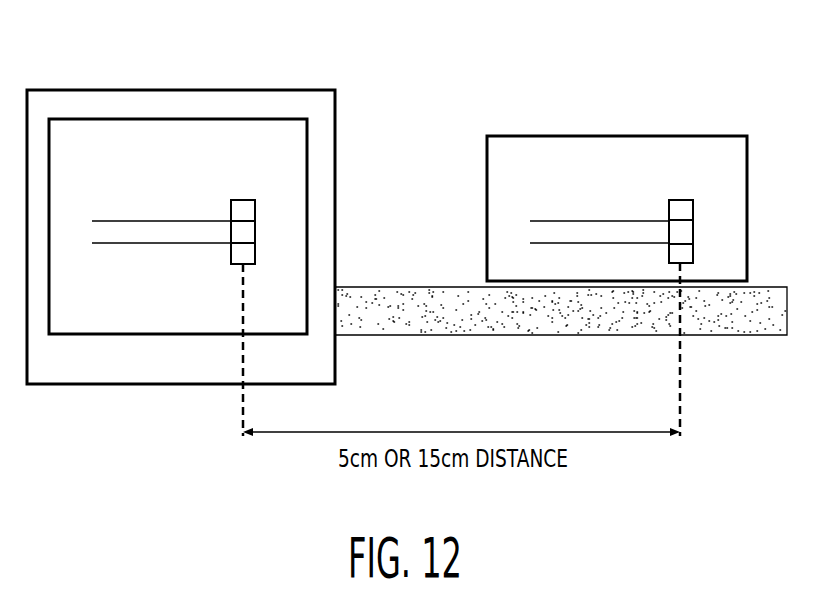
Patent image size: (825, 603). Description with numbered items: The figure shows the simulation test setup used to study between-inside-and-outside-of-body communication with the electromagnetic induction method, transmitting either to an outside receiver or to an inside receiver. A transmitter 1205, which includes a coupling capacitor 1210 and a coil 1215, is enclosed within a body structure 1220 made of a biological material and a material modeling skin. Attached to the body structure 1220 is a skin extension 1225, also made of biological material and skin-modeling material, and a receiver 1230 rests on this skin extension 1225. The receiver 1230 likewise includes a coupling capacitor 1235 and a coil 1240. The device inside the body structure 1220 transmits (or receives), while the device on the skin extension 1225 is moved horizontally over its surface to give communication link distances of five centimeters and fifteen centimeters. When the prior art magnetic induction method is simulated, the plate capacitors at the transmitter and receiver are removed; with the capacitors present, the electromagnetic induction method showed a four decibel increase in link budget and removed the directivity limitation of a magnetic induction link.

The transmitter 1205 is at (127, 119).
The coupling capacitor 1210 is at (148, 274).
The coil 1215 is at (247, 200).
The body structure 1220 is at (140, 384).
The skin extension 1225 is at (377, 287).
The receiver 1230 is at (623, 134).
The coupling capacitor 1235 is at (522, 250).
The coil 1240 is at (718, 213).